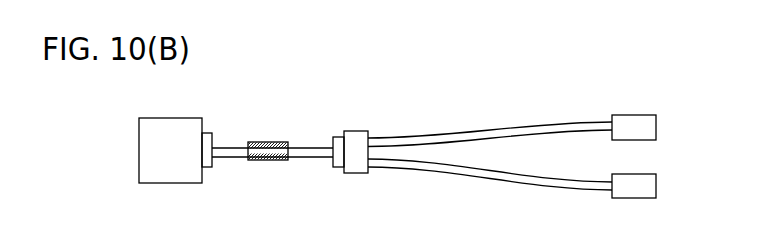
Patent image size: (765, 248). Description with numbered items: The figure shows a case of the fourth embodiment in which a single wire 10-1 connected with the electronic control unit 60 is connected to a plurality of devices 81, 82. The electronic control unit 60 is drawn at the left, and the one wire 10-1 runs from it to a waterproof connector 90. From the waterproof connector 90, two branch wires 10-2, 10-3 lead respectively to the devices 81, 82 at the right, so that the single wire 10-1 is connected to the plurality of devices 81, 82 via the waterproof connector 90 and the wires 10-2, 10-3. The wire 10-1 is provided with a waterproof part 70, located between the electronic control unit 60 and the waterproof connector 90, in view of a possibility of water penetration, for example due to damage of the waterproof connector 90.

The electronic control unit 60 is at (168, 183).
The waterproof part 70 is at (263, 142).
The wire 10-1 is at (312, 157).
The waterproof connector 90 is at (352, 173).
The wire 10-2 is at (498, 125).
The wire 10-3 is at (493, 183).
The device 81 is at (635, 115).
The device 82 is at (633, 198).